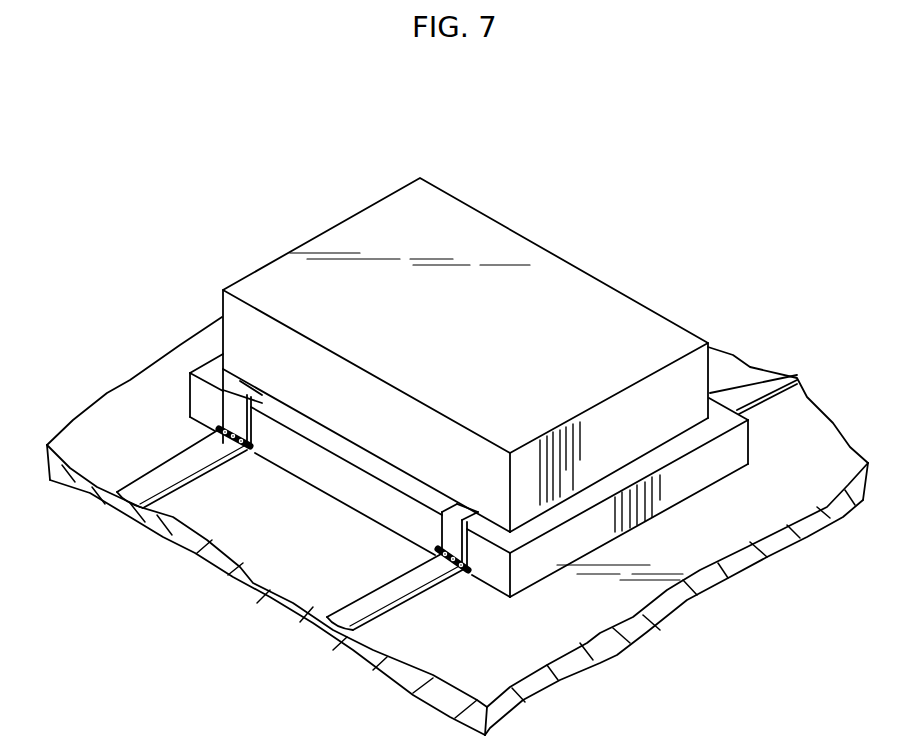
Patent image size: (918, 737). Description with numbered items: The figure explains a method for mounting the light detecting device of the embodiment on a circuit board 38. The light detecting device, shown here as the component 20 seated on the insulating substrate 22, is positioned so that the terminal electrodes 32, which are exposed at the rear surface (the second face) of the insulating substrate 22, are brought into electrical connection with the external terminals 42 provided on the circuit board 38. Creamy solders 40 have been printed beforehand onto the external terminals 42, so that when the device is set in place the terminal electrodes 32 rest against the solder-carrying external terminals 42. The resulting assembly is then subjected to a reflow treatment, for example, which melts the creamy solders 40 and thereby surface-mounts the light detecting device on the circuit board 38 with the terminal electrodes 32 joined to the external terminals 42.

The electronic component 20 is at (566, 257).
The insulating substrate 22 is at (681, 473).
The terminal electrodes 32 is at (228, 412).
The circuit board 38 is at (252, 588).
The creamy solders 40 is at (444, 565).
The external terminals 42 is at (197, 456).